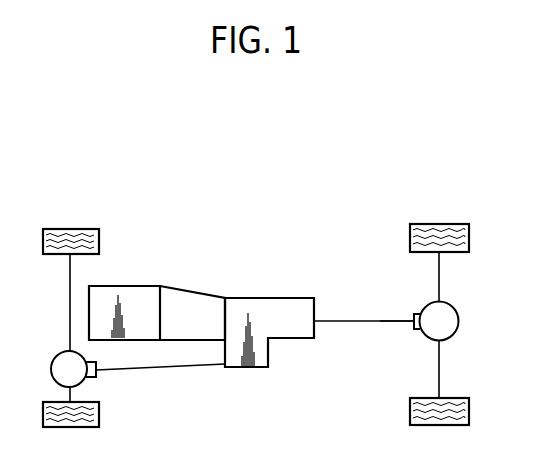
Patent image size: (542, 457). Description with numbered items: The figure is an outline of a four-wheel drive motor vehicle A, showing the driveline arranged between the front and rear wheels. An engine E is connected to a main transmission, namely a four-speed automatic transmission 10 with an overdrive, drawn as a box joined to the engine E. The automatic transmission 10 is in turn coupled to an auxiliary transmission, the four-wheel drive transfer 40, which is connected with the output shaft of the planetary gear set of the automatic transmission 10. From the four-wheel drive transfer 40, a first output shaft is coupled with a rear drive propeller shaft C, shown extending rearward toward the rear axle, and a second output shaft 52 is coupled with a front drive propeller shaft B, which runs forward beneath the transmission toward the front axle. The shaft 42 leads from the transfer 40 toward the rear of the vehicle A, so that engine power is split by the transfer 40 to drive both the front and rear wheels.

The four-wheel drive vehicle A is at (363, 188).
The engine E is at (141, 292).
The 4-speed automatic transmission 10 is at (189, 297).
The 4-wheel drive transfer 40 is at (262, 299).
The rear propeller shaft 42 is at (317, 320).
The rear drive propeller shaft C is at (379, 320).
The front drive propeller shaft B is at (158, 369).
The second output shaft 52 is at (224, 369).